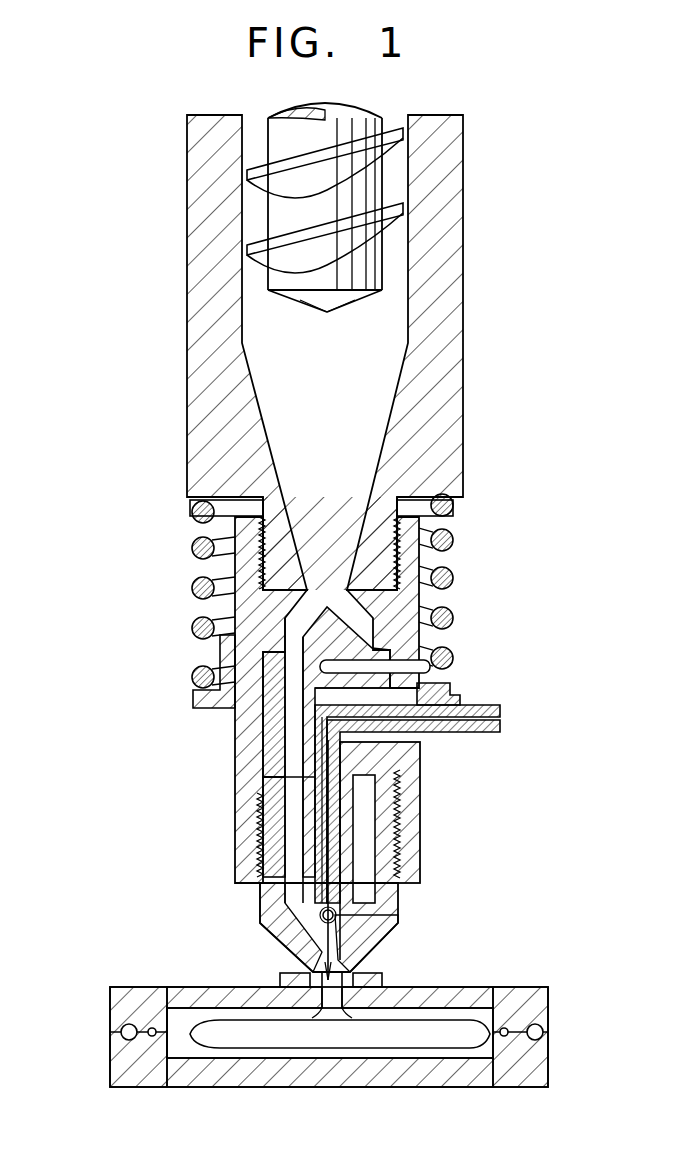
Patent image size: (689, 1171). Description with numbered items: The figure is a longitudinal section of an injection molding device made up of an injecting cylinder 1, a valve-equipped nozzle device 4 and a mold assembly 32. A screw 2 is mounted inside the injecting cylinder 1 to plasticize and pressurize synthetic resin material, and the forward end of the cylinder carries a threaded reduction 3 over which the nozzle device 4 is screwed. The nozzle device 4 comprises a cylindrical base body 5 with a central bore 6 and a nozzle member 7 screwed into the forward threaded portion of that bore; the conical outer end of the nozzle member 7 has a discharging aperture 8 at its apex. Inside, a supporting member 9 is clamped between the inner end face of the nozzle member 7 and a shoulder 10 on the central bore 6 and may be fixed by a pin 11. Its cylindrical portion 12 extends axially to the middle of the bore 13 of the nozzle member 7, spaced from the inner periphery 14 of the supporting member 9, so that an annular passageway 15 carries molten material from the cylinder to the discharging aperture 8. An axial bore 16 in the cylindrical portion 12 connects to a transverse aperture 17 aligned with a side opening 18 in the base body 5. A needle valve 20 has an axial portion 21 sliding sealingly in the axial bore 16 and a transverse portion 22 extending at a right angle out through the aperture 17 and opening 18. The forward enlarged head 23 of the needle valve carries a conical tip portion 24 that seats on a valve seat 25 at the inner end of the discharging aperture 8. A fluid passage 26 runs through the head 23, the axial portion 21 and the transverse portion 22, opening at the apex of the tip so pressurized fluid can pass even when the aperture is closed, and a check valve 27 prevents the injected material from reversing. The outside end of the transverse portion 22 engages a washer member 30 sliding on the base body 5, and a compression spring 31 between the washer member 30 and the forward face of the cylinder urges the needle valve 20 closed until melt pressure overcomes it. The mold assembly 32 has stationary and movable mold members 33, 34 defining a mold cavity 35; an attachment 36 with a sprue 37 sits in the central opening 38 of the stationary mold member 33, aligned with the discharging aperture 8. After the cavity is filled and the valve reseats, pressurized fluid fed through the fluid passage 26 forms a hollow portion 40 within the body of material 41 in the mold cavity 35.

The injecting cylinder 1 is at (455, 178).
The screw 2 is at (380, 285).
The threaded reduction 3 is at (397, 533).
The nozzle device 4 is at (442, 600).
The cylindrical base body 5 is at (415, 558).
The central bore 6 is at (268, 735).
The nozzle member 7 is at (388, 880).
The discharging aperture 8 is at (310, 975).
The supporting member 9 is at (387, 753).
The shoulder 10 is at (372, 652).
The pin 11 is at (420, 668).
The cylindrical portion 12 is at (343, 797).
The bore 13 is at (370, 850).
The inner periphery 14 is at (290, 660).
The annular passageway 15 is at (293, 740).
The axial bore 16 is at (320, 803).
The transverse aperture 17 is at (355, 697).
The side opening 18 is at (460, 703).
The needle valve 20 is at (346, 827).
The axial portion 21 is at (317, 783).
The transverse portion 22 is at (490, 706).
The enlarged head 23 is at (318, 912).
The conical tip portion 24 is at (343, 960).
The valve seat 25 is at (355, 978).
The fluid passage 26 is at (330, 762).
The check valve 27 is at (345, 912).
The washer member 30 is at (193, 698).
The compression spring 31 is at (192, 548).
The mold assembly 32 is at (555, 1000).
The stationary mold member 33 is at (120, 1005).
The movable mold member 34 is at (120, 1050).
The mold cavity 35 is at (275, 1060).
The attachment 36 is at (290, 990).
The sprue 37 is at (380, 990).
The central opening 38 is at (231, 990).
The hollow portion 40 is at (210, 1045).
The body of material 41 is at (175, 1060).